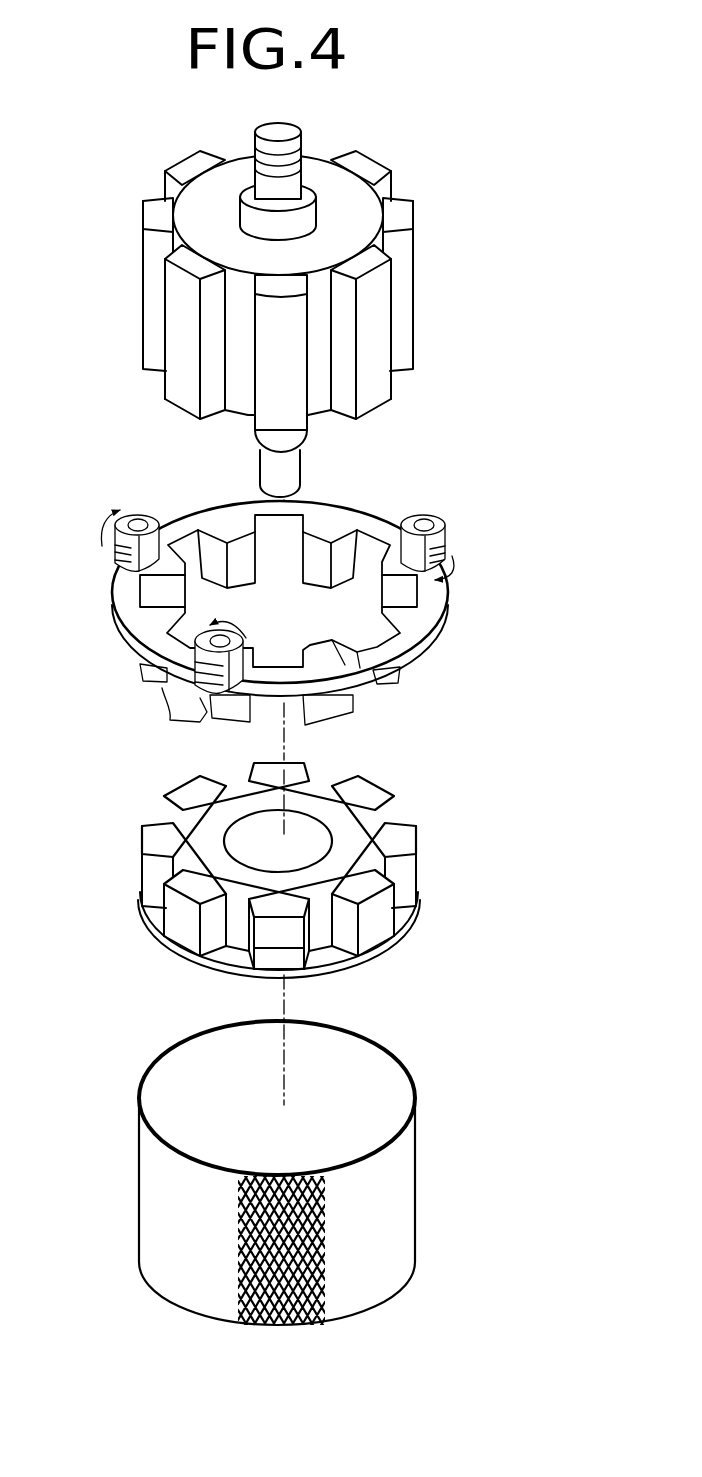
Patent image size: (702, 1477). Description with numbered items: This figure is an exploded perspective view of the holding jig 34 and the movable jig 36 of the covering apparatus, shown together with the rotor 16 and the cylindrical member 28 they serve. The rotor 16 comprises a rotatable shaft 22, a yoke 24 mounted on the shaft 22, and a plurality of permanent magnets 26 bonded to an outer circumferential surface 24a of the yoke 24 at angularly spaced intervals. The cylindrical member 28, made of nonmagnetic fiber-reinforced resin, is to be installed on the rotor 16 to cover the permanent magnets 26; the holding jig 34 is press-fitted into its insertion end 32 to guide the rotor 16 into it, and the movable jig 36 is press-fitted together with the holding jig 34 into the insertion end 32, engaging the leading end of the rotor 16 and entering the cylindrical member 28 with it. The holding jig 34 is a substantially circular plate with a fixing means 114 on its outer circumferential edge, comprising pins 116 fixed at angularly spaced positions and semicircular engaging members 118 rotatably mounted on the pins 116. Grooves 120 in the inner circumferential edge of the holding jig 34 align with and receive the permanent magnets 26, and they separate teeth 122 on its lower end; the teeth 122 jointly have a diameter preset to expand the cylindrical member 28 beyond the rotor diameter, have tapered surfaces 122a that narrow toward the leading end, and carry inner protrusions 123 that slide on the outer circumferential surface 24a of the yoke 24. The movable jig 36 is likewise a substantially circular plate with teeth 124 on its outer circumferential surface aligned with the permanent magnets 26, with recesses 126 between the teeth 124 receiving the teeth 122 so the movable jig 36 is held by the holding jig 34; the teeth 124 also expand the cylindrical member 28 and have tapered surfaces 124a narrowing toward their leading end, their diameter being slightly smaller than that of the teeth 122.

The rotor 16 is at (310, 289).
The rotatable shaft 22 is at (305, 178).
The yoke 24 is at (238, 172).
The outer circumferential surface 24a is at (318, 396).
The permanent magnets 26 is at (378, 385).
The cylindrical member 28 is at (312, 1173).
The insertion end 32 is at (408, 1068).
The holding jig 34 is at (327, 606).
The movable jig 36 is at (267, 890).
The fixing means 114 is at (315, 569).
The pins 116 is at (421, 515).
The engaging members 118 is at (448, 527).
The grooves 120 is at (280, 663).
The teeth 122 is at (338, 708).
The tapered surfaces 122a is at (168, 688).
The inner protrusions 123 is at (238, 545).
The teeth 124 is at (172, 903).
The tapered surfaces 124a is at (182, 942).
The recesses 126 is at (340, 932).